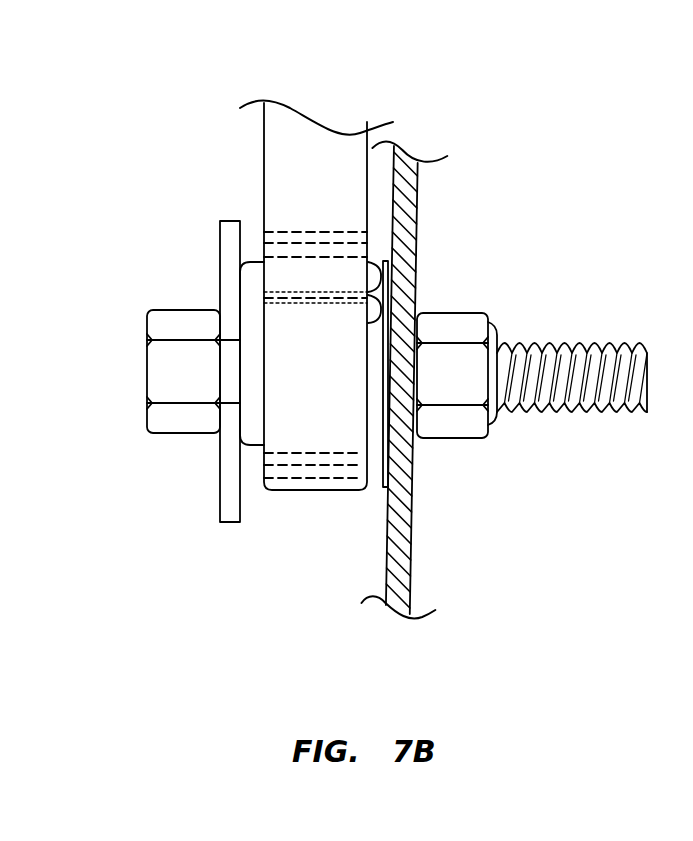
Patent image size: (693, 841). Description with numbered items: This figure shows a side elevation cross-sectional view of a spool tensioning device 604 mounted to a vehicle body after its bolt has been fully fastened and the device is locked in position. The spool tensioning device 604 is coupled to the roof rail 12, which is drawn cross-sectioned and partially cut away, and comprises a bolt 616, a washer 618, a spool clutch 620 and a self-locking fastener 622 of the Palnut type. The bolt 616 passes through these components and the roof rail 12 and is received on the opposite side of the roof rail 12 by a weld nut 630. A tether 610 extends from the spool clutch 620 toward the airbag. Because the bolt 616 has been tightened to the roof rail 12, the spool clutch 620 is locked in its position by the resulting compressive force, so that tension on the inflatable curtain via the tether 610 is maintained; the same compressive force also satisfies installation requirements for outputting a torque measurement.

The spool tensioning device 604 is at (134, 242).
The tether 610 is at (313, 153).
The roof rail 12 is at (420, 207).
The bolt 616 is at (175, 362).
The washer 618 is at (230, 221).
The spool clutch 620 is at (258, 445).
The self-locking fastener 622 is at (382, 487).
The weld nut 630 is at (462, 313).